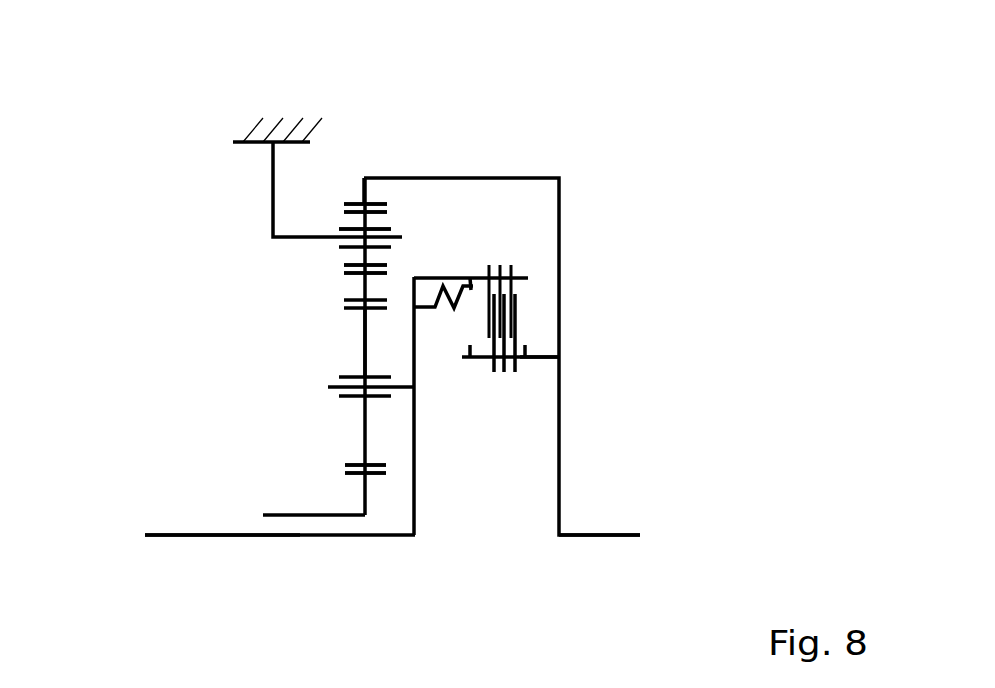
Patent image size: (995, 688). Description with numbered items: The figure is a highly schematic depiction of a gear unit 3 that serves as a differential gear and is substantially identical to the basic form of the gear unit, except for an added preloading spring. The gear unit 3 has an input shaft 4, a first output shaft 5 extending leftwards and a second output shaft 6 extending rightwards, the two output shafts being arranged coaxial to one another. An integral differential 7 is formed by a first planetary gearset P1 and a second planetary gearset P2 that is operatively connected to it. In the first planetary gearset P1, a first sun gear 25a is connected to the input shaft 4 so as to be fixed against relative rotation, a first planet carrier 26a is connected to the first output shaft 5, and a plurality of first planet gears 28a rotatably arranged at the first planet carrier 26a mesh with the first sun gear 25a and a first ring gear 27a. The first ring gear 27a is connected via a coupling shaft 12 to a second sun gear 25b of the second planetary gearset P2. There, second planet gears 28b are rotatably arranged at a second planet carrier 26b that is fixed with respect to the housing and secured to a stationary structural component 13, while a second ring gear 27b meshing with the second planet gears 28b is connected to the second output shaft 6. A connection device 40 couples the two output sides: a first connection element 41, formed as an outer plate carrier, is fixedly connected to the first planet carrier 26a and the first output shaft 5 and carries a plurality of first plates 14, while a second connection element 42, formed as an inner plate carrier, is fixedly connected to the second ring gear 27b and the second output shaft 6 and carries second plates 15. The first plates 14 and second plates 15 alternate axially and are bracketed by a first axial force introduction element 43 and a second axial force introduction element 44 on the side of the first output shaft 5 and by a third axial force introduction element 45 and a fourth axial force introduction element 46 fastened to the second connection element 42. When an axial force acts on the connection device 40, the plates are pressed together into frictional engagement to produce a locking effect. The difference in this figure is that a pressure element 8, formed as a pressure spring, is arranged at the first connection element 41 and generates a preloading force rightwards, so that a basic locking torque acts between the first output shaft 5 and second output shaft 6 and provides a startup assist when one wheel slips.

The gear unit 3 is at (585, 150).
The input shaft 4 is at (295, 517).
The first output shaft 5 is at (230, 535).
The second output shaft 6 is at (598, 536).
The integral differential 7 is at (366, 160).
The pressure element 8 is at (420, 308).
The coupling shaft 12 is at (363, 288).
The stationary structural component 13 is at (282, 135).
The first plates 14 is at (489, 265).
The second plates 15 is at (494, 372).
The first sun gear 25a is at (352, 477).
The second sun gear 25b is at (344, 273).
The first planet carrier 26a is at (329, 388).
The second planet carrier 26b is at (273, 218).
The first ring gear 27a is at (343, 300).
The second ring gear 27b is at (385, 203).
The first planet gears 28a is at (363, 343).
The second planet gears 28b is at (341, 226).
The connection device 40 is at (505, 405).
The first connection element 41 is at (428, 277).
The second connection element 42 is at (535, 358).
The first axial force introduction element 43 is at (456, 277).
The second axial force introduction element 44 is at (522, 282).
The third axial force introduction element 45 is at (462, 357).
The fourth axial force introduction element 46 is at (525, 345).
The first planetary gearset P1 is at (327, 402).
The second planetary gearset P2 is at (357, 187).